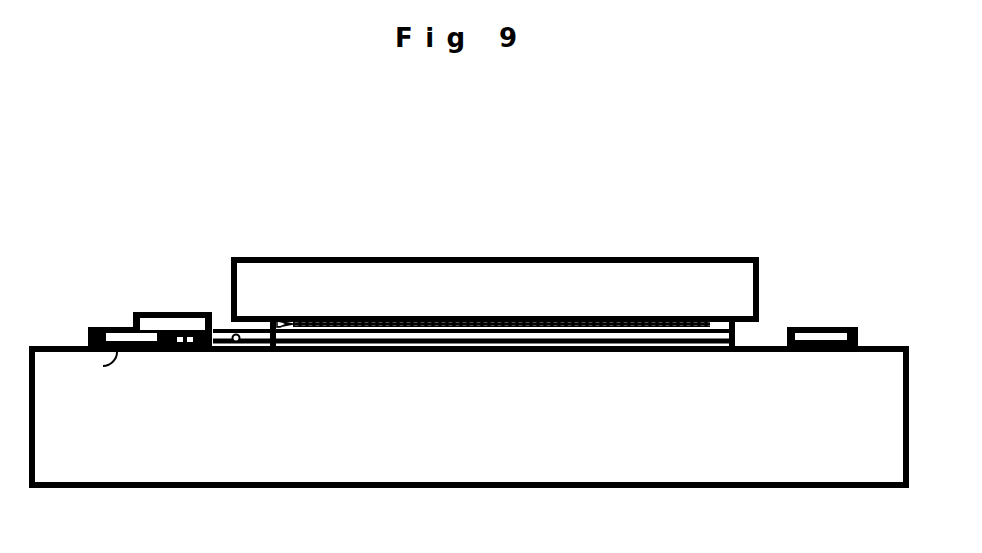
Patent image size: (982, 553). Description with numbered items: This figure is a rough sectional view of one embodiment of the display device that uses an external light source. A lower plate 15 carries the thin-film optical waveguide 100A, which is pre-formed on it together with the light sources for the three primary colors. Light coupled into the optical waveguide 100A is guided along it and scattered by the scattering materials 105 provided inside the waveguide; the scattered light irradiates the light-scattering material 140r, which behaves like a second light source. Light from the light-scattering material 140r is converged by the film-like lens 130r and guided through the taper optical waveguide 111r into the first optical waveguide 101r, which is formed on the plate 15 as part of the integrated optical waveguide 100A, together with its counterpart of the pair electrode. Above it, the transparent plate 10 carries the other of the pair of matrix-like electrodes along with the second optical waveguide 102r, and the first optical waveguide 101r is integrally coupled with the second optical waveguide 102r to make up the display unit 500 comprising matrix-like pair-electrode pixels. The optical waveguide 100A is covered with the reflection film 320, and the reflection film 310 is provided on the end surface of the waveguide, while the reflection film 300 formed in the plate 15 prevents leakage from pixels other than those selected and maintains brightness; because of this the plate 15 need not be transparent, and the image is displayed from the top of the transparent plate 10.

The plate 10 is at (558, 270).
The plate 15 is at (713, 473).
The optical waveguide 100A is at (173, 316).
The scattering materials in the optical waveguide 105 is at (88, 331).
The lens 130r is at (231, 317).
The light-scattering material 140r is at (210, 350).
The taper optical waveguide 111r is at (273, 347).
The reflection film 320 is at (143, 311).
The reflection film 310 is at (298, 347).
The reflection film 300 is at (460, 350).
The display unit 500 is at (537, 350).
The first optical waveguide 101r is at (610, 353).
The second optical waveguide 102r is at (715, 317).